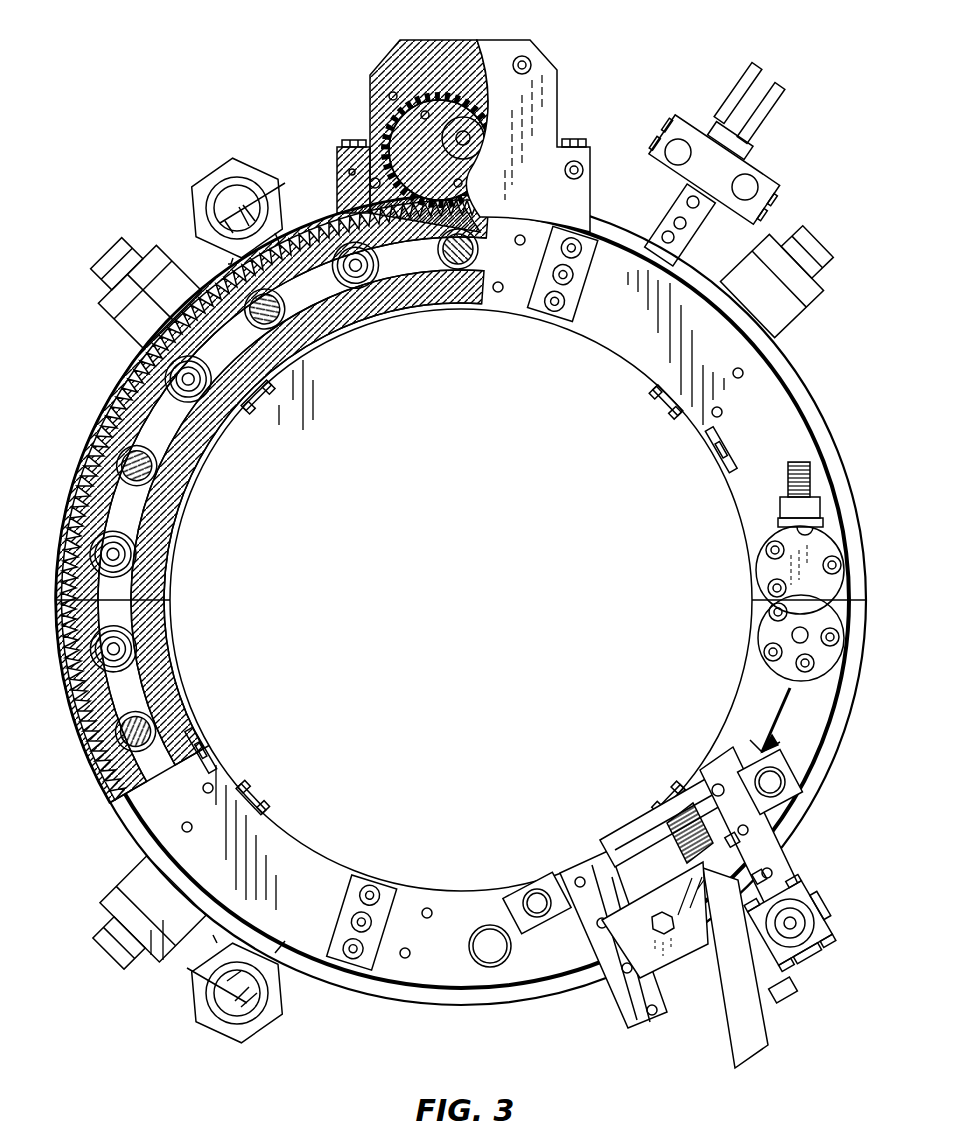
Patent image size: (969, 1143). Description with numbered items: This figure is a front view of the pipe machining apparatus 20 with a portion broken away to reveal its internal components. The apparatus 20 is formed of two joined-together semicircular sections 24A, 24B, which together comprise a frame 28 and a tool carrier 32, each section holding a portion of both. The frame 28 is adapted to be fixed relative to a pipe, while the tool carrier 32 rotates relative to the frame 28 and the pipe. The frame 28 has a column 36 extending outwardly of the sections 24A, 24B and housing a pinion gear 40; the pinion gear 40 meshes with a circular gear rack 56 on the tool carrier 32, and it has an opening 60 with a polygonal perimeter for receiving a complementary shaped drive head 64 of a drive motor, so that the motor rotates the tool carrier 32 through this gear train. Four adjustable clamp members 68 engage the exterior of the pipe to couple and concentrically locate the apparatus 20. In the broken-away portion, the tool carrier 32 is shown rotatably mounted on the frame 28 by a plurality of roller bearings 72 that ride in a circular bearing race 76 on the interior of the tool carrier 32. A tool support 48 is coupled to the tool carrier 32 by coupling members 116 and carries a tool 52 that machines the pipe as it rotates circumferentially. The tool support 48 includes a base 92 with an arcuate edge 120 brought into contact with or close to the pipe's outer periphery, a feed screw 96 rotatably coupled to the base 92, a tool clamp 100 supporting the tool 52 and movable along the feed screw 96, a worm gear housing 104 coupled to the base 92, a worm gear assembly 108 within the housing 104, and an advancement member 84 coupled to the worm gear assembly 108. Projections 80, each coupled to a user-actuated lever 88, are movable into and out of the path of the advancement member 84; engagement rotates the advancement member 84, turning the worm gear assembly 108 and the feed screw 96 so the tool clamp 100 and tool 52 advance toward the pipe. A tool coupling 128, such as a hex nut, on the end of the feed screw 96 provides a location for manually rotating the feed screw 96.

The pipe machining apparatus 20 is at (496, 554).
The semicircular section 24A is at (690, 407).
The semicircular section 24B is at (516, 794).
The frame 28 is at (254, 498).
The tool carrier 32 is at (479, 597).
The column 36 is at (545, 46).
The pinion gear 40 is at (440, 148).
The tool support 48 is at (700, 885).
The tool 52 is at (622, 843).
The circular gear rack 56 is at (270, 500).
The opening 60 is at (420, 132).
The drive head 64 is at (345, 147).
The clamp member 68 is at (491, 600).
The roller bearing 72 is at (263, 493).
The circular bearing race 76 is at (461, 517).
The projection 80 is at (680, 148).
The advancement member 84 is at (829, 893).
The lever 88 is at (758, 70).
The base 92 is at (607, 1008).
The feed screw 96 is at (692, 800).
The tool clamp 100 is at (697, 952).
The worm gear housing 104 is at (833, 922).
The worm gear assembly 108 is at (815, 952).
The coupling member 116 is at (518, 884).
The arcuate edge 120 is at (690, 768).
The tool coupling 128 is at (779, 1008).